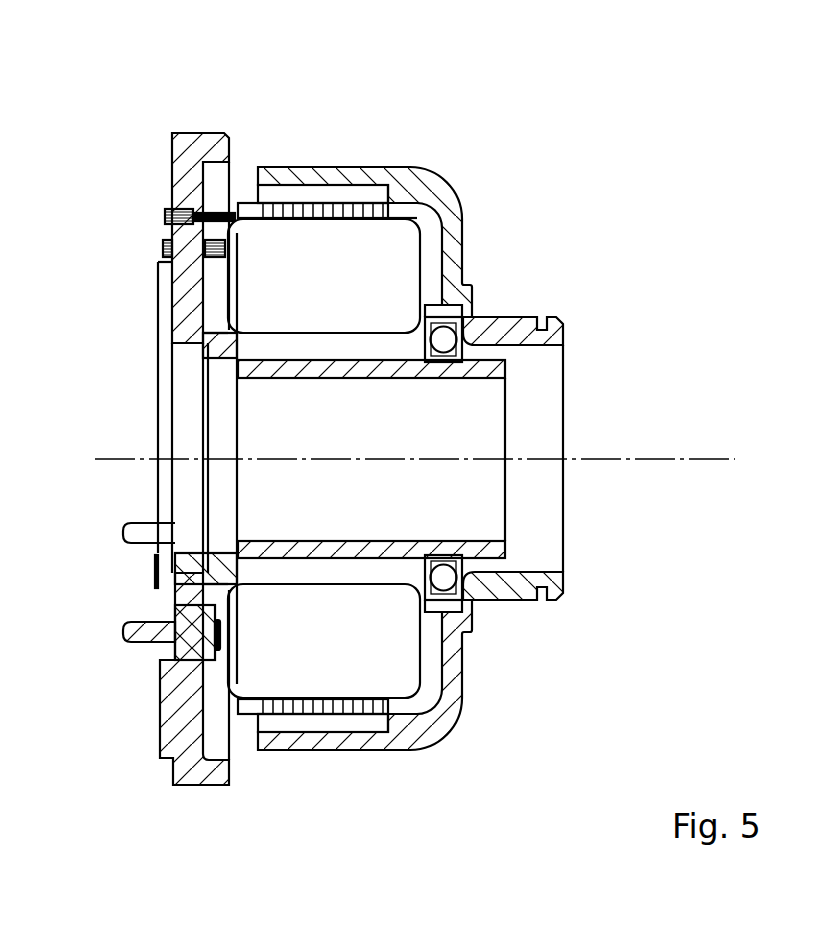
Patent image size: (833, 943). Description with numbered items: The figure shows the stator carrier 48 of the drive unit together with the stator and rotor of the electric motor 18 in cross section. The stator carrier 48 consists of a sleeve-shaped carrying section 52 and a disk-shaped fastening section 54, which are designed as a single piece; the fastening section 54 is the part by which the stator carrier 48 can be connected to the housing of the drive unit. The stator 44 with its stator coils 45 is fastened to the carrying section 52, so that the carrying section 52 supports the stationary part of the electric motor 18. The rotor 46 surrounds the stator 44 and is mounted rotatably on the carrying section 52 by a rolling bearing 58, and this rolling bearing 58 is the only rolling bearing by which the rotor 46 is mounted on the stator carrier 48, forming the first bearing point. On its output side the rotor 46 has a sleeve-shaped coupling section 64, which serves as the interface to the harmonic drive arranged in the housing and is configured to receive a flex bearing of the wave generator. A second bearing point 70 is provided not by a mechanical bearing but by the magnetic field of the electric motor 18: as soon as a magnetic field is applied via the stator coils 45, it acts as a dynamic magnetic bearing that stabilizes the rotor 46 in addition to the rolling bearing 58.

The electric motor 18 is at (475, 393).
The stator 44 is at (393, 270).
The stator coils 45 is at (325, 213).
The rotor 46 is at (455, 690).
The stator carrier 48 is at (400, 368).
The carrying section 52 is at (510, 370).
The fastening section 54 is at (197, 148).
The rolling bearing 58 is at (443, 578).
The coupling section 64 is at (508, 603).
The second bearing point 70 is at (398, 212).